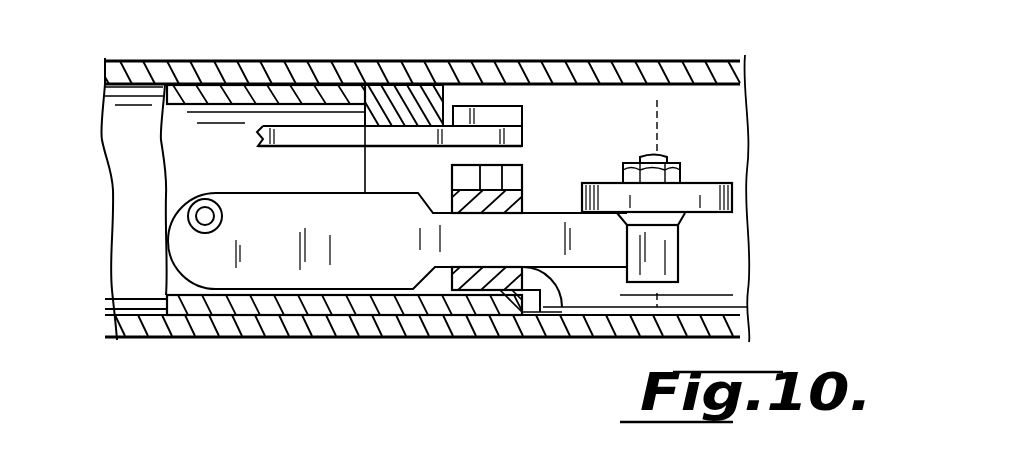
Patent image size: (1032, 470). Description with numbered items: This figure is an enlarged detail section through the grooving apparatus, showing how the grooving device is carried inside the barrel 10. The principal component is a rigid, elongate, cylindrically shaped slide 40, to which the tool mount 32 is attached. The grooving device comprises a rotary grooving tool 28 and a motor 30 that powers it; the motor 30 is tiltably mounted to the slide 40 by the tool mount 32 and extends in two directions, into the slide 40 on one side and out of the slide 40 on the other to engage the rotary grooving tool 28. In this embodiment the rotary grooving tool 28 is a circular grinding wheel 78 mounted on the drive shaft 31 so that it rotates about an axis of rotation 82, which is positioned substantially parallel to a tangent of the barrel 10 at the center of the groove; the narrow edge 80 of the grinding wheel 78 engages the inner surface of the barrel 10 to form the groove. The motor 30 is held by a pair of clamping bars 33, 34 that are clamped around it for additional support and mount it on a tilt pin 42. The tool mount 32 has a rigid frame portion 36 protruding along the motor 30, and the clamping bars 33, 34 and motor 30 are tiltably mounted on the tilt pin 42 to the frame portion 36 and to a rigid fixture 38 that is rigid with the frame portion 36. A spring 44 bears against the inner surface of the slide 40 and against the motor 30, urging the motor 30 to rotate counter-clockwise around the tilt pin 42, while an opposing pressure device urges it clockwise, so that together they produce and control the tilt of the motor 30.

The barrel 10 is at (418, 61).
The rotary grooving tool 28 is at (643, 268).
The motor 30 is at (328, 260).
The drive shaft 31 is at (660, 160).
The tool mount 32 is at (380, 300).
The clamping bar 33 is at (523, 196).
The clamping bar 34 is at (556, 315).
The rigid frame portion 36 is at (315, 130).
The rigid fixture 38 is at (522, 167).
The slide 40 is at (265, 300).
The tilt pin 42 is at (465, 300).
The spring 44 is at (190, 216).
The grinding wheel 78 is at (737, 212).
The narrow edge 80 is at (605, 183).
The axis of rotation 82 is at (655, 248).